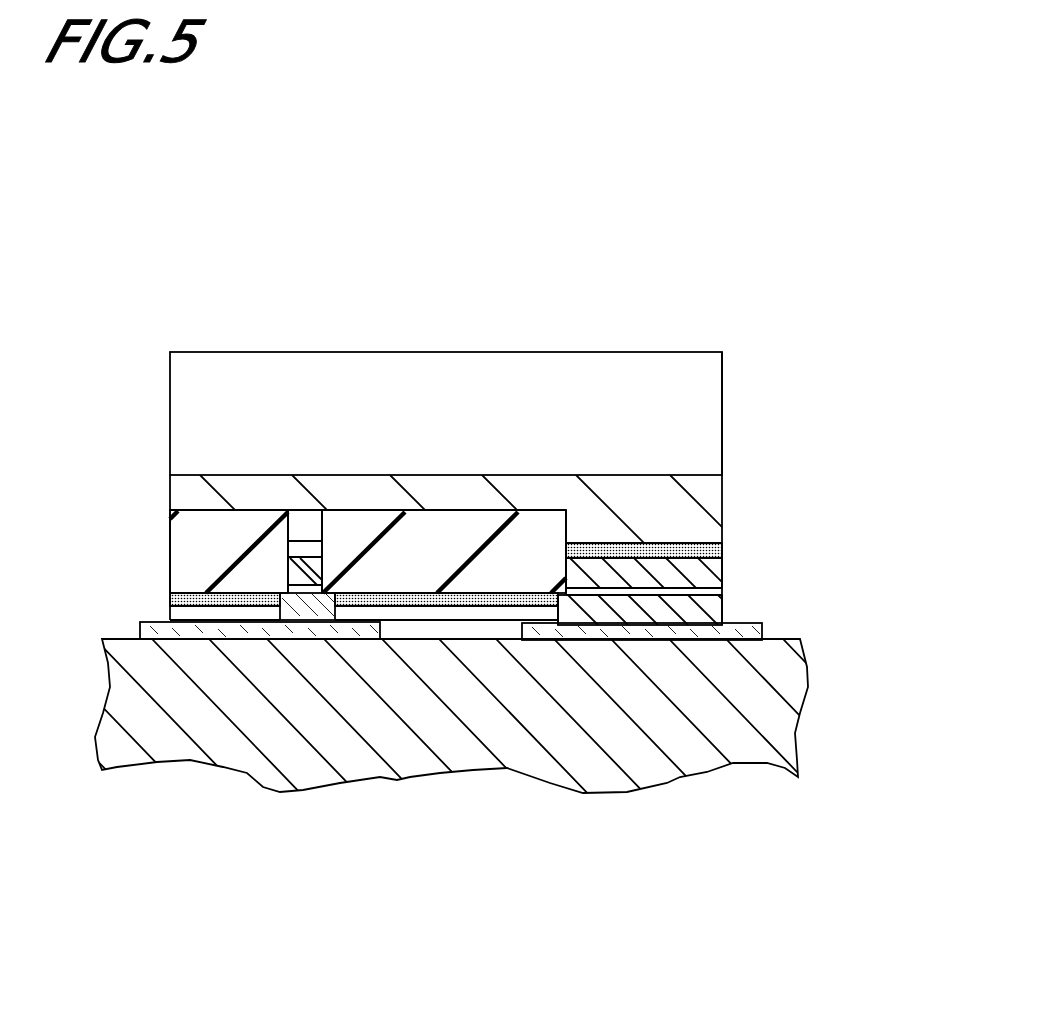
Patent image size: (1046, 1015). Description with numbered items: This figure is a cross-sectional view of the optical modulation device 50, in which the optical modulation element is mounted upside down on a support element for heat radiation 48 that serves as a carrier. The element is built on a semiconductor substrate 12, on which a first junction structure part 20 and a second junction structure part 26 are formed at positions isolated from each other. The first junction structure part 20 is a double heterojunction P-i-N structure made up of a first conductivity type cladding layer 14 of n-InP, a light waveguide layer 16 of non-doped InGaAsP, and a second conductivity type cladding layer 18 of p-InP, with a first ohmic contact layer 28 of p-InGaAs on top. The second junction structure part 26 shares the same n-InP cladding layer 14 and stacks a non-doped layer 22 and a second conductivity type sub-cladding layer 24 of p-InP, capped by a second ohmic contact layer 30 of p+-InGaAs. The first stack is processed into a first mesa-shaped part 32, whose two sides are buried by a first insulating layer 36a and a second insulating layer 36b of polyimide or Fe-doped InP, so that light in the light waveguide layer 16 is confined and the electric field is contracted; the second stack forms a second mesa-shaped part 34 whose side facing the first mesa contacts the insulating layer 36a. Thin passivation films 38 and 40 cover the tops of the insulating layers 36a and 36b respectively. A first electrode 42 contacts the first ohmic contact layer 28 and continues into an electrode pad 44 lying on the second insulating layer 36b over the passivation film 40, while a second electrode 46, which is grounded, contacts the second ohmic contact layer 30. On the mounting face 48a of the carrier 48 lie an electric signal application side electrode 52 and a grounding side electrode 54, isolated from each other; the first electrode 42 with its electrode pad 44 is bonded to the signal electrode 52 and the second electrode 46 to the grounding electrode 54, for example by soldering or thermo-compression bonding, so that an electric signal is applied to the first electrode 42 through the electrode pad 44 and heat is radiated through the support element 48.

The semiconductor substrate 12 is at (172, 428).
The first conductivity type cladding layer 14 is at (308, 545).
The light waveguide layer 16 is at (303, 549).
The second conductivity type cladding layer 18 is at (286, 541).
The first junction structure part 20 is at (362, 316).
The non-doped layer 22 is at (645, 548).
The second conductivity type sub-cladding layer 24 is at (642, 577).
The second junction structure part 26 is at (703, 320).
The first ohmic contact layer 28 is at (340, 600).
The second ohmic contact layer 30 is at (652, 590).
The first mesa-shaped part 32 is at (405, 263).
The second mesa-shaped part 34 is at (757, 274).
The first insulating layer 36a is at (517, 527).
The second insulating layer 36b is at (172, 553).
The passivation film 38 is at (430, 597).
The passivation film 40 is at (172, 600).
The first electrode 42 is at (352, 590).
The electrode pad 44 is at (168, 620).
The second electrode 46 is at (715, 608).
The support element for heat radiation 48 is at (783, 753).
The mounting face 48a is at (781, 636).
The optical modulation device 50 is at (768, 317).
The electric signal application side electrode 52 is at (186, 632).
The grounding side electrode 54 is at (692, 634).